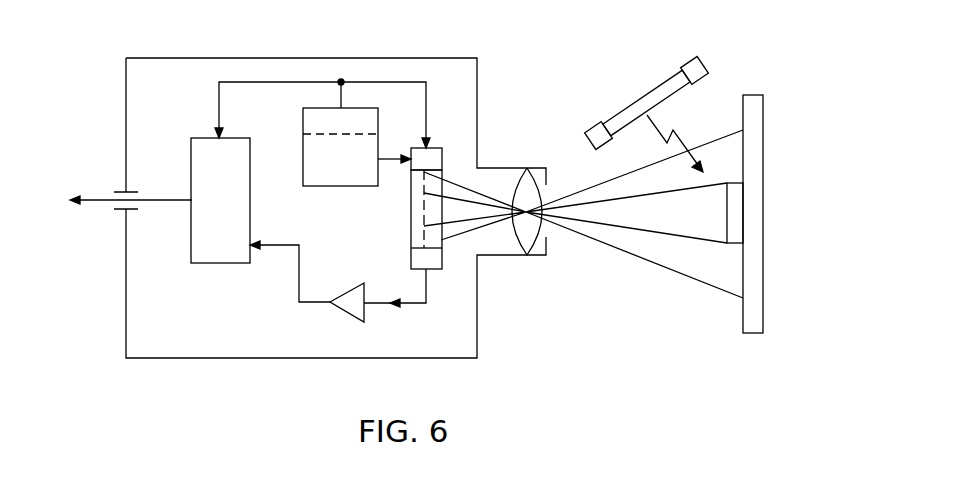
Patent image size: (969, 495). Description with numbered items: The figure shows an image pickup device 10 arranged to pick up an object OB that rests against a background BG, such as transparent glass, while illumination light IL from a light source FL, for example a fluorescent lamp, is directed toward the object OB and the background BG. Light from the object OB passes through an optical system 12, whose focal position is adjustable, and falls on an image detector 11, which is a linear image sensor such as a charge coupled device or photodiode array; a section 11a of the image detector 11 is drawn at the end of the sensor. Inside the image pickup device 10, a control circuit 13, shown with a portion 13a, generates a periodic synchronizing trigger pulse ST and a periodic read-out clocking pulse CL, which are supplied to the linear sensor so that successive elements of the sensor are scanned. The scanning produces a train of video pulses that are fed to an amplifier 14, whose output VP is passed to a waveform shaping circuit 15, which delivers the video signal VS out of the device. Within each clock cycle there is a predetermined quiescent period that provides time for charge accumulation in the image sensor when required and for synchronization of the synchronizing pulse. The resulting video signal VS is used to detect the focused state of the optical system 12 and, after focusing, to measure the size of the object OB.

The image pickup device 10 is at (141, 56).
The image detector 11 is at (437, 232).
The shift register / storage section of image sensor 11a is at (432, 158).
The optical system 12 is at (522, 187).
The control circuit 13 is at (303, 147).
The counter section of timing circuit 13a is at (303, 113).
The amplifier 14 is at (340, 308).
The waveform shaping circuit 15 is at (220, 265).
The video signal VS is at (117, 201).
The clock signal line CL is at (322, 106).
The synchronizing trigger pulse ST is at (394, 151).
The video output signal VP is at (314, 290).
The light source FL is at (652, 88).
The illumination light IL is at (675, 132).
The background BG is at (764, 112).
The object to be picked-up OB is at (727, 218).